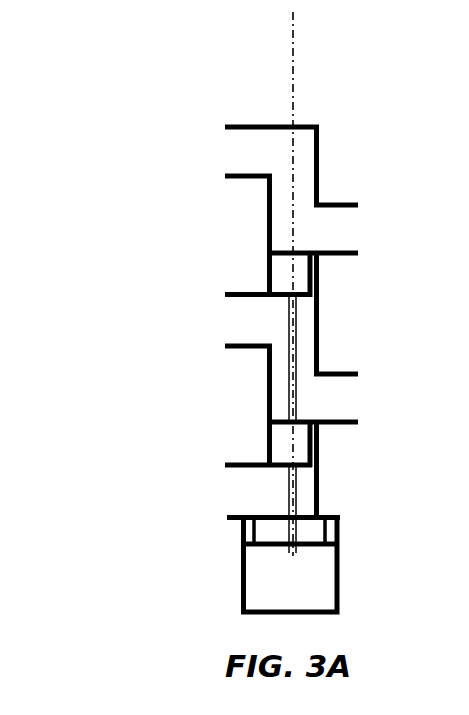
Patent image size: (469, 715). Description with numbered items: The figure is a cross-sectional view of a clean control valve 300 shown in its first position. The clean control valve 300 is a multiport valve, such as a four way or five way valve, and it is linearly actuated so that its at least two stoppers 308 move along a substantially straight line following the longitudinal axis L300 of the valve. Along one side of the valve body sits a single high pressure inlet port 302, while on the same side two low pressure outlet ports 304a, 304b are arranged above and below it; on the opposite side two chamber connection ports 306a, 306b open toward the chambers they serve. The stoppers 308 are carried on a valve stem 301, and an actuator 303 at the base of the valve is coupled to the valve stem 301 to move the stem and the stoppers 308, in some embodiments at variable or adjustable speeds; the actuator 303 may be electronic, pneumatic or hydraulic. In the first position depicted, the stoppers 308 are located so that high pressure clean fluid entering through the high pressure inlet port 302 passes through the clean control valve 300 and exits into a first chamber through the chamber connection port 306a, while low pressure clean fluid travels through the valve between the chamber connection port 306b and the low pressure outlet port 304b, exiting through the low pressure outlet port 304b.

The clean control valve 300 is at (206, 80).
The longitudinal axis L300 is at (293, 62).
The low pressure outlet port 304b is at (225, 152).
The chamber connection port 306b is at (347, 238).
The stopper 308 is at (290, 277).
The high pressure inlet port 302 is at (222, 326).
The chamber connection port 306a is at (350, 410).
The low pressure outlet port 304a is at (227, 515).
The actuator 303 is at (275, 585).
The valve stem 301 is at (290, 530).